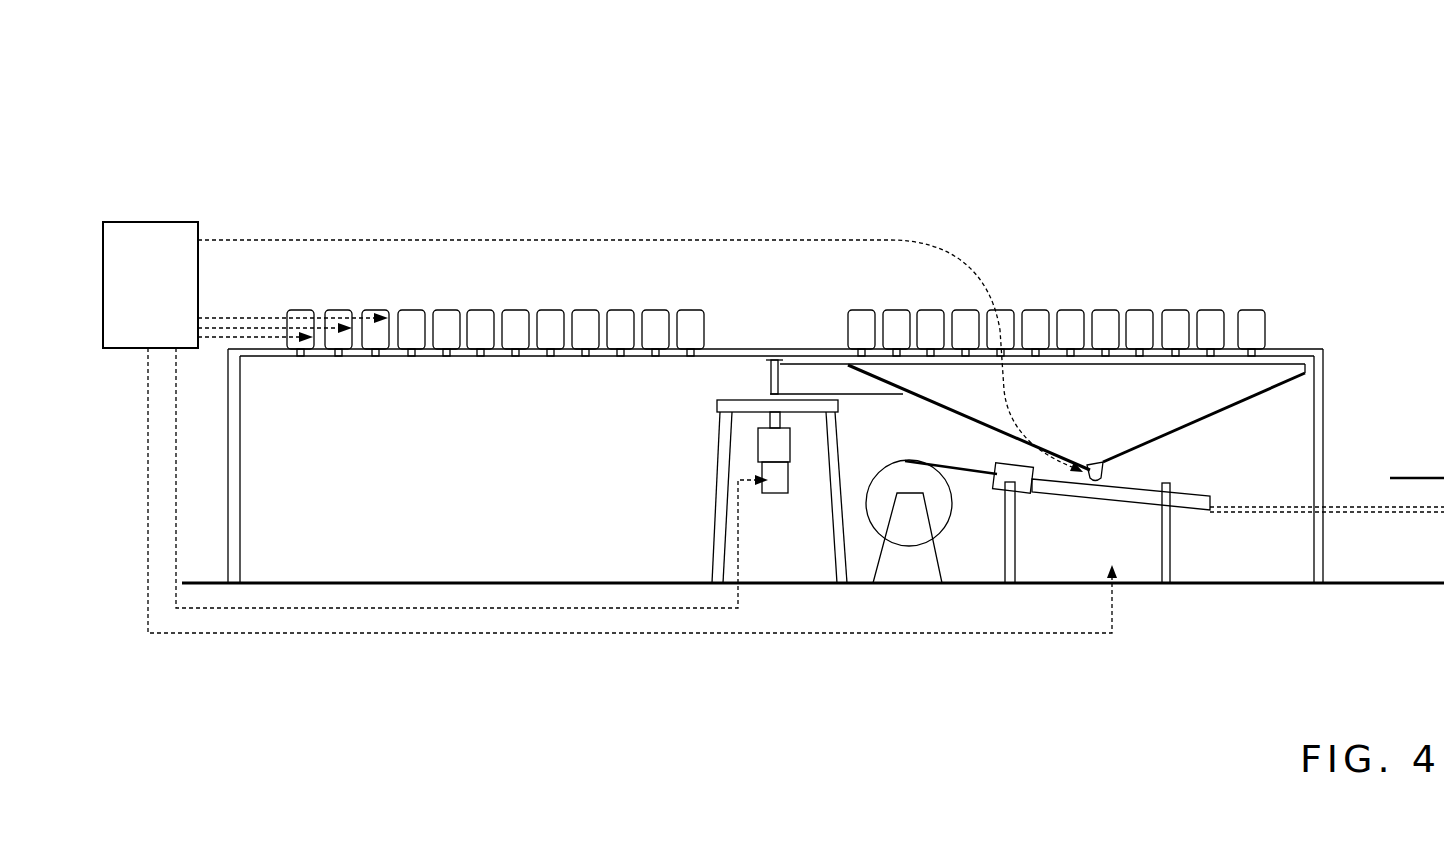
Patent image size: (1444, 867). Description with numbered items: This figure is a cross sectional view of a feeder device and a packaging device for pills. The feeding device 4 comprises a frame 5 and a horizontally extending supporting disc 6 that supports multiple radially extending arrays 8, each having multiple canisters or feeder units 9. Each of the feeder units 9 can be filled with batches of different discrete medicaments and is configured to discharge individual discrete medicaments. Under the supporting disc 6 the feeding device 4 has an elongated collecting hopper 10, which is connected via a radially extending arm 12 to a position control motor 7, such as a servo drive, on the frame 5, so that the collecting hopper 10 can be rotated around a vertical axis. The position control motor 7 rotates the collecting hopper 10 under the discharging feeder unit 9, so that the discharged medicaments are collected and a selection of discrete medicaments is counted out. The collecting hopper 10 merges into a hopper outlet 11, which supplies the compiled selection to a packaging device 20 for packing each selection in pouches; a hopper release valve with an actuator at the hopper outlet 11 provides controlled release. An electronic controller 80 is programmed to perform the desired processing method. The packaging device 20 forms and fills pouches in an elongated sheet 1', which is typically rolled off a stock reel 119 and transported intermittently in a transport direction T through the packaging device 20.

The feeding device 4 is at (166, 127).
The electronic controller 80 is at (163, 291).
The supporting disc 6 is at (757, 349).
The radially extending arrays 8 is at (706, 330).
The feeder units 9 is at (620, 318).
The radially extending arm 12 is at (860, 390).
The collecting hopper 10 is at (1228, 402).
The hopper outlet 11 is at (1094, 462).
The frame 5 is at (808, 583).
The position control motor 7 is at (778, 483).
The stock reel 119 is at (877, 517).
The packaging device 20 is at (1192, 522).
The elongated sheet 1' is at (1327, 479).
The transport direction T is at (1417, 463).